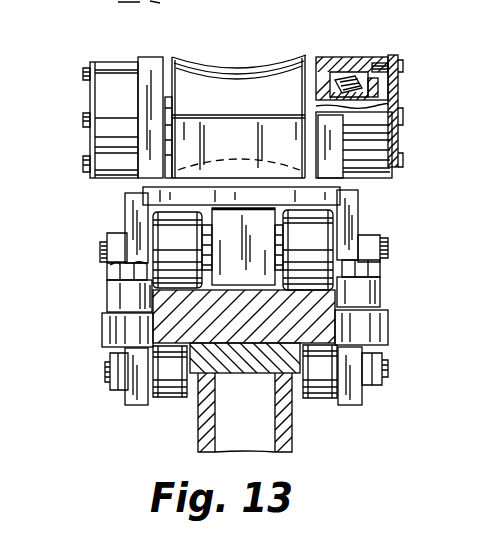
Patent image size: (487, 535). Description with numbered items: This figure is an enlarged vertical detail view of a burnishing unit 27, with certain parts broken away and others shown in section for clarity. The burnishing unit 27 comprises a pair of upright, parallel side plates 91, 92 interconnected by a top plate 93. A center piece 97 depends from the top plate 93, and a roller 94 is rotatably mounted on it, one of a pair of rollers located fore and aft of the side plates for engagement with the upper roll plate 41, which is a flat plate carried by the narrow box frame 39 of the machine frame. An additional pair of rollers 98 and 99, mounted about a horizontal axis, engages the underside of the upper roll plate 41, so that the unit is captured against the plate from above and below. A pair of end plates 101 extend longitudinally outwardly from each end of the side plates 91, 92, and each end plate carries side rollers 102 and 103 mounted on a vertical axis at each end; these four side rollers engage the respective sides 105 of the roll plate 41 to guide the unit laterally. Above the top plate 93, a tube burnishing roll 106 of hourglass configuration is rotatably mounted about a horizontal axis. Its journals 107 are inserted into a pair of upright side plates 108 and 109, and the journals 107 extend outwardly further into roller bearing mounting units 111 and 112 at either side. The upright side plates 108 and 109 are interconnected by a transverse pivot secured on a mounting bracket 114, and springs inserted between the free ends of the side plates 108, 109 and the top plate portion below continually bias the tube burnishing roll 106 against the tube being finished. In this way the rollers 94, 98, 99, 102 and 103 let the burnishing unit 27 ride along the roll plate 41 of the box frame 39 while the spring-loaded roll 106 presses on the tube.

The burnishing unit 27 is at (425, 41).
The box frame 39 is at (287, 441).
The upper roll plate 41 is at (318, 330).
The side plate 91 is at (128, 211).
The side plate 92 is at (358, 215).
The top plate 93 is at (147, 188).
The roller 94 is at (325, 243).
The center piece 97 is at (262, 227).
The roller 98 is at (167, 400).
The roller 99 is at (318, 392).
The end plate 101 is at (380, 293).
The side roller 102 is at (118, 326).
The side roller 103 is at (388, 330).
The side of roll plate 105 is at (150, 298).
The tube burnishing roll 106 is at (265, 68).
The journal 107 is at (172, 98).
The upright side plate 108 is at (150, 58).
The upright side plate 109 is at (333, 57).
The roller bearing mounting unit 111 is at (106, 74).
The roller bearing mounting unit 112 is at (393, 42).
The mounting bracket 114 is at (482, 174).